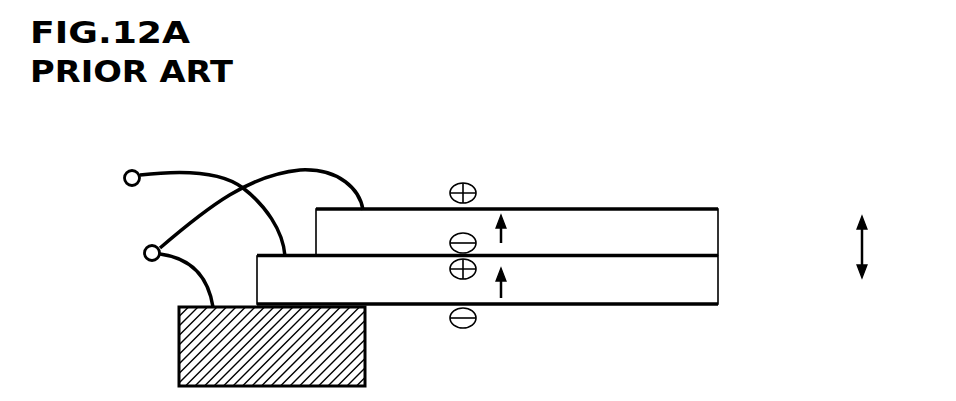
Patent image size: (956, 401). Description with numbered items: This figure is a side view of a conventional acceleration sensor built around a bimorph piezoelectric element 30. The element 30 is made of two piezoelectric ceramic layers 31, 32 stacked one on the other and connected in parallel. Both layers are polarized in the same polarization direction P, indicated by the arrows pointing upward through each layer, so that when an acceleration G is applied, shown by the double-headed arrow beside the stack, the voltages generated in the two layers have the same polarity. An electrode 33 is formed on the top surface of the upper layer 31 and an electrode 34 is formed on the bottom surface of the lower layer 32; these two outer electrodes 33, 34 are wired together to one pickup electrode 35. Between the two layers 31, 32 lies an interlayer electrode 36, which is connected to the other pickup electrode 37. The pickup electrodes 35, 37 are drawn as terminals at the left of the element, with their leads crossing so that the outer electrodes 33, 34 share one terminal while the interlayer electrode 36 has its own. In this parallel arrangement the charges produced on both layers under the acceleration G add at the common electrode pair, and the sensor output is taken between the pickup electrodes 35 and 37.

The bimorph piezoelectric element 30 is at (520, 235).
The piezoelectric ceramic layer 31 is at (712, 225).
The piezoelectric ceramic layer 32 is at (712, 278).
The electrode 33 is at (658, 207).
The electrode 34 is at (650, 305).
The pickup electrode 35 is at (175, 237).
The interlayer electrode 36 is at (610, 254).
The pickup electrode 37 is at (163, 168).
The polarization direction P is at (500, 240).
The acceleration G is at (847, 247).